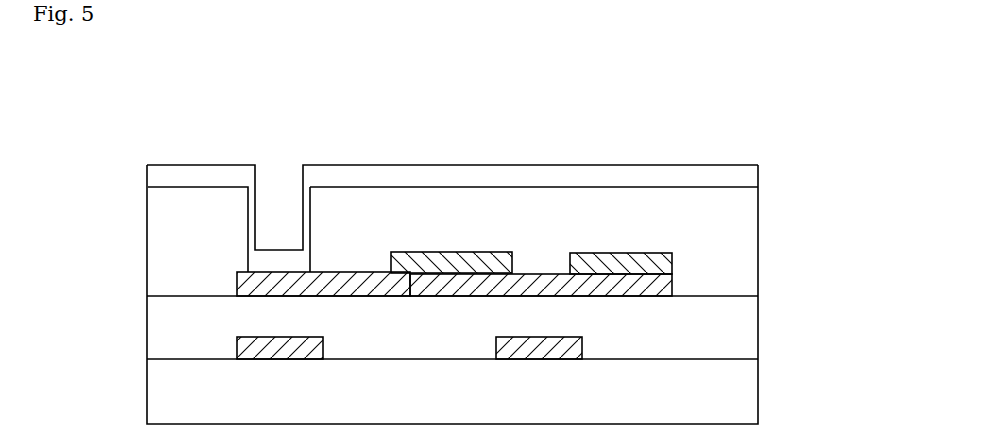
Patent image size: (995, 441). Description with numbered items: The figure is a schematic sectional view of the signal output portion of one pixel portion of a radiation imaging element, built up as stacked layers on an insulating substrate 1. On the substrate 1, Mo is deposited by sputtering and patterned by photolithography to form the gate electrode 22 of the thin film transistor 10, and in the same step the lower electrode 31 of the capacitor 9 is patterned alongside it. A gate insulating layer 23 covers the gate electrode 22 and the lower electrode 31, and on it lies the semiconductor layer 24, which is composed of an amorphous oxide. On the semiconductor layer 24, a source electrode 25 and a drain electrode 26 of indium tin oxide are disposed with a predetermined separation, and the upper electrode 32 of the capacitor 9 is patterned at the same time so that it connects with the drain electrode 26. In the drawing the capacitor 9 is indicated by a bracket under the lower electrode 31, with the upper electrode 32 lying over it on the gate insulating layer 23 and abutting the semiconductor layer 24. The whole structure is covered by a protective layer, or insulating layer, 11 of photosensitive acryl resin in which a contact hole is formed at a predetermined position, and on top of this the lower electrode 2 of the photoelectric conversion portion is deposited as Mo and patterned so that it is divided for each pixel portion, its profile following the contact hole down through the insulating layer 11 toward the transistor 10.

The insulating substrate 1 is at (748, 398).
The lower electrode 2 is at (750, 180).
The capacitor 9 is at (327, 374).
The thin film transistor 10 is at (558, 214).
The protective layer (insulating layer) 11 is at (748, 238).
The gate electrode 22 is at (582, 341).
The gate insulating layer 23 is at (748, 310).
The semiconductor layer 24 is at (672, 292).
The source electrode 25 is at (625, 253).
The drain electrode 26 is at (471, 252).
The lower electrode 31 is at (323, 341).
The upper electrode 32 is at (237, 276).